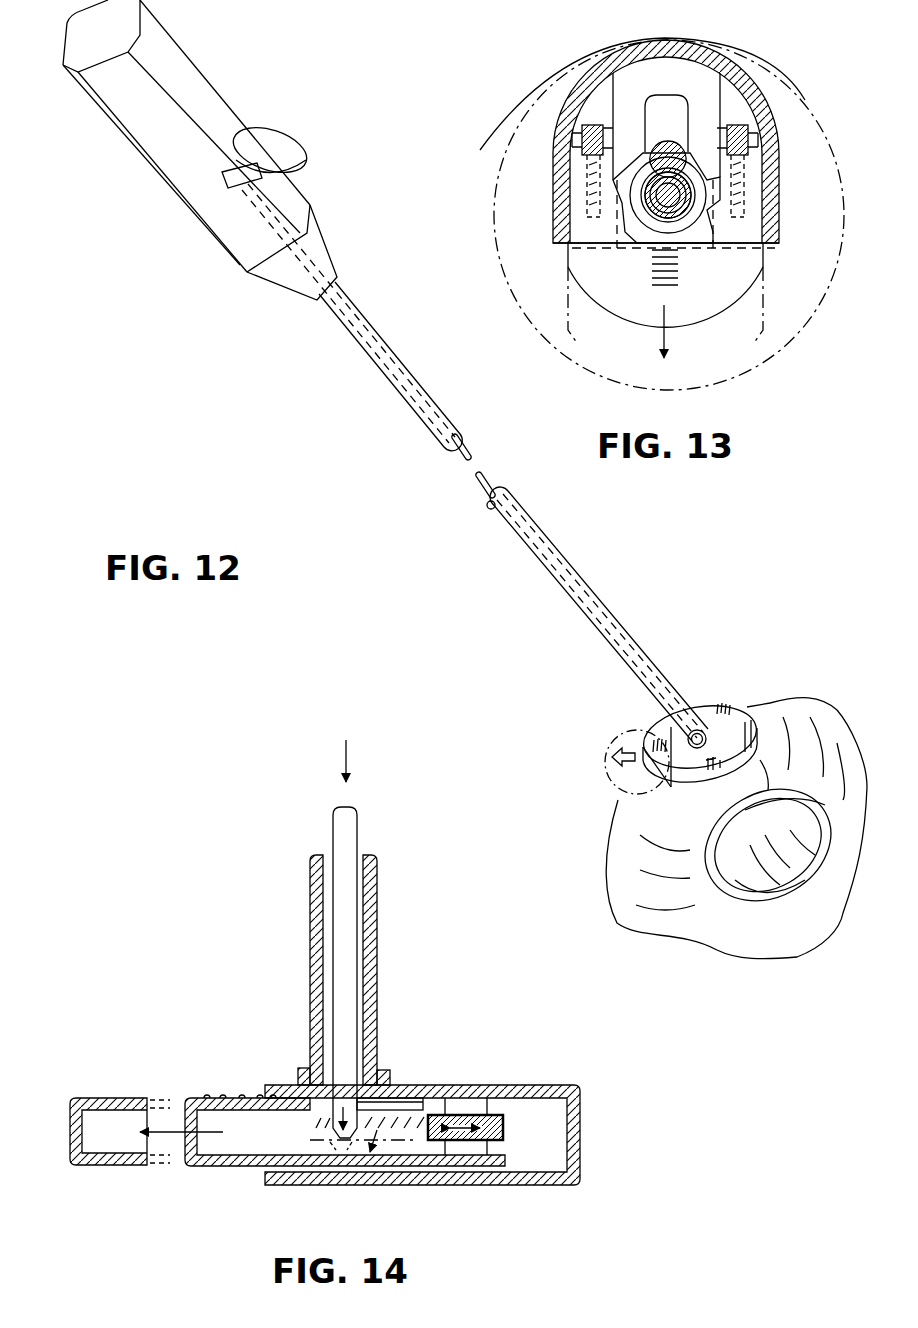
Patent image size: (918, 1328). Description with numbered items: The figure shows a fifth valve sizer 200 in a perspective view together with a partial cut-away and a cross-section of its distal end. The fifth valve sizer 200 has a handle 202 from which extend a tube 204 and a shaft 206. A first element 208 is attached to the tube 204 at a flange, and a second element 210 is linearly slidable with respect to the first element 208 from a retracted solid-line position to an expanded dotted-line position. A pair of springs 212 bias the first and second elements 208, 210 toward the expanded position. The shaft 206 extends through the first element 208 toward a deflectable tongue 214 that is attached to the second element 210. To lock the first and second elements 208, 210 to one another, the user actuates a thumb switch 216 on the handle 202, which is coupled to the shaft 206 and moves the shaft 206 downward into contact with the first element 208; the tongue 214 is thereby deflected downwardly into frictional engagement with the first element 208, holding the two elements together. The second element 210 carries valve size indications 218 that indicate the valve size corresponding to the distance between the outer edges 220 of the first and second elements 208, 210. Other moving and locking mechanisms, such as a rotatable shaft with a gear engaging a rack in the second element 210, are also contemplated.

In FIG. 12, the fifth valve sizer 200 is at (333, 394).
In FIG. 12, the handle 202 is at (152, 165).
In FIG. 12, the tube 204 is at (540, 556).
In FIG. 12, the shaft 206 is at (457, 457).
In FIG. 12, the first element 208 is at (706, 704).
In FIG. 13, the first element 208 is at (782, 158).
In FIG. 14, the first element 208 is at (538, 1090).
In FIG. 12, the second element 210 is at (650, 763).
In FIG. 13, the second element 210 is at (590, 83).
In FIG. 14, the second element 210 is at (207, 1098).
In FIG. 13, the springs 212 is at (742, 128).
In FIG. 14, the springs 212 is at (493, 1112).
In FIG. 13, the deflectable tongue 214 is at (676, 112).
In FIG. 14, the deflectable tongue 214 is at (330, 1183).
In FIG. 12, the thumb switch 216 is at (273, 150).
In FIG. 12, the valve size indications 218 is at (658, 740).
In FIG. 14, the valve size indications 218 is at (240, 1098).
In FIG. 13, the outer edges 220 is at (680, 330).
In FIG. 14, the outer edges 220 is at (72, 1152).